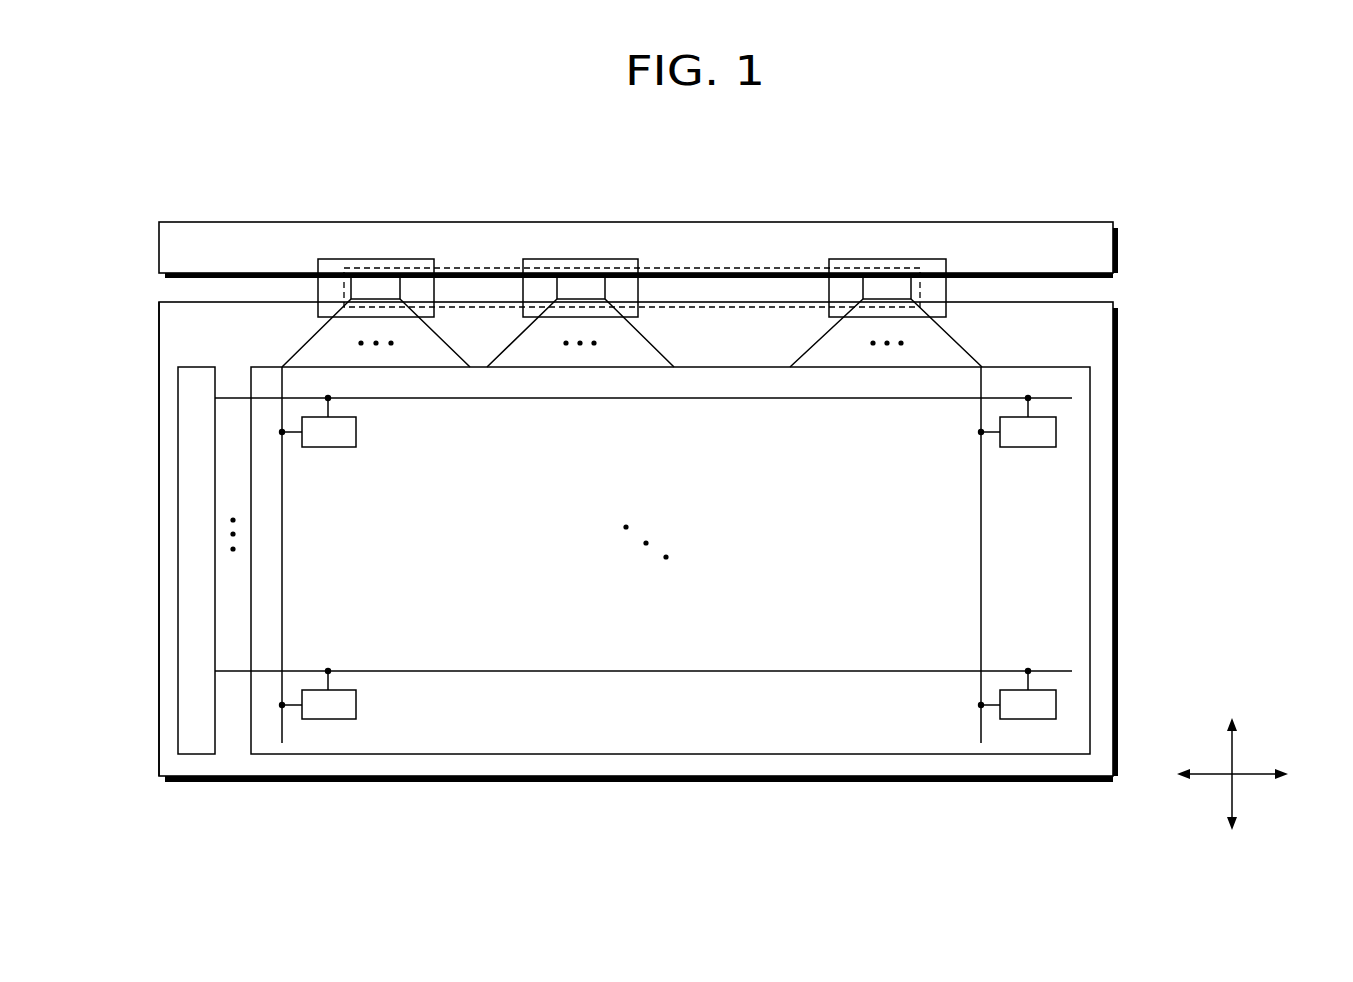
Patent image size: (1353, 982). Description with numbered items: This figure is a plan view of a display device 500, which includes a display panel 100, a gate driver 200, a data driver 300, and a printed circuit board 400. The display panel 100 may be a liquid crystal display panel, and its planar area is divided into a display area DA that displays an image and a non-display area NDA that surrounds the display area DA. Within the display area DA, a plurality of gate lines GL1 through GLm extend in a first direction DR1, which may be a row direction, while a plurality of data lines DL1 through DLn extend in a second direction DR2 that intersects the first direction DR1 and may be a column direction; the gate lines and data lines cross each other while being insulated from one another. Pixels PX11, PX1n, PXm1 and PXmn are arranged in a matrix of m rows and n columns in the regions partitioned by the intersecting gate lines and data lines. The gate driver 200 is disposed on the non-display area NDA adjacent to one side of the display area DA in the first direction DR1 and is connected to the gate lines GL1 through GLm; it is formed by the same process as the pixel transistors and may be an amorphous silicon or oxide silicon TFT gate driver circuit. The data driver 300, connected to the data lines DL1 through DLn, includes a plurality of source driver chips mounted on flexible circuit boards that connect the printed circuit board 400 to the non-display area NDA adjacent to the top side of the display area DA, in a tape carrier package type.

The display device 500 is at (1040, 172).
The printed circuit board 400 is at (1118, 245).
The display panel 100 is at (1118, 527).
The data driver 300 is at (724, 268).
The gate driver 200 is at (178, 558).
The non-display area NDA is at (168, 482).
The display area DA is at (1090, 588).
The gate line GL1 is at (493, 400).
The gate line GLm is at (500, 670).
The data line DL1 is at (282, 553).
The data line DLn is at (981, 553).
The pixel PX11 is at (317, 421).
The pixel PX1n is at (1017, 421).
The pixel PXm1 is at (317, 693).
The pixel PXmn is at (1017, 693).
The first direction DR1 is at (1253, 775).
The second direction DR2 is at (1232, 761).